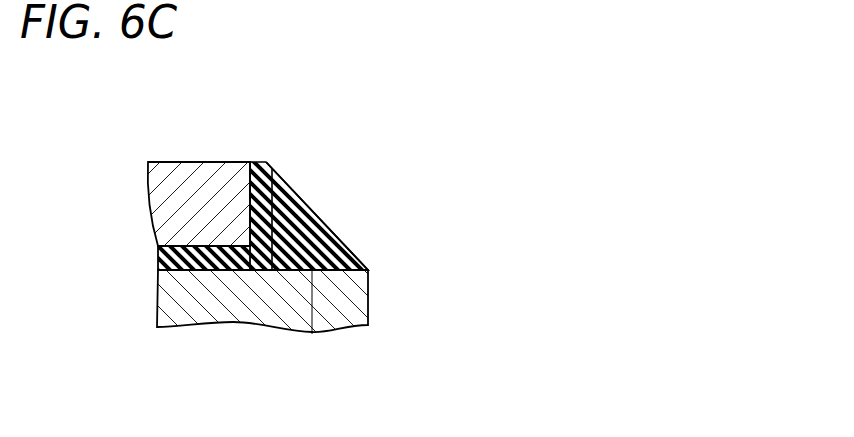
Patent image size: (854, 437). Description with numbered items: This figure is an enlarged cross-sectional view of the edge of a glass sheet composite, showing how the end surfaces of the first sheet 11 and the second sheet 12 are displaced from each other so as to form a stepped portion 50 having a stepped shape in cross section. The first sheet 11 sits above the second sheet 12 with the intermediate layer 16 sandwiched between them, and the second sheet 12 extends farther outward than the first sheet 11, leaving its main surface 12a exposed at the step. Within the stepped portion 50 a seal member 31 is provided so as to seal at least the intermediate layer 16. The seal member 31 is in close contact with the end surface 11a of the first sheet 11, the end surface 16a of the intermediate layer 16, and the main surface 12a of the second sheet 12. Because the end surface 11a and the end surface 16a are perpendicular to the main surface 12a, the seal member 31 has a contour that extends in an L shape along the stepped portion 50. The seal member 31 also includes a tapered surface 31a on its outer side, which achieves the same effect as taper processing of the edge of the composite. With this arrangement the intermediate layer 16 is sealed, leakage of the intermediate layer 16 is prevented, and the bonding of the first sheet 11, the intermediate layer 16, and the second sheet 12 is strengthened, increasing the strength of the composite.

The first sheet 11 is at (148, 183).
The end surface of the first sheet 11a is at (250, 214).
The intermediate layer 16 is at (158, 263).
The end surface of the intermediate layer 16a is at (368, 288).
The stepped portion 50 is at (296, 198).
The seal member 31 is at (331, 233).
The tapered surface 31a is at (316, 216).
The second sheet 12 is at (368, 297).
The main surface of the second sheet 12a is at (355, 257).